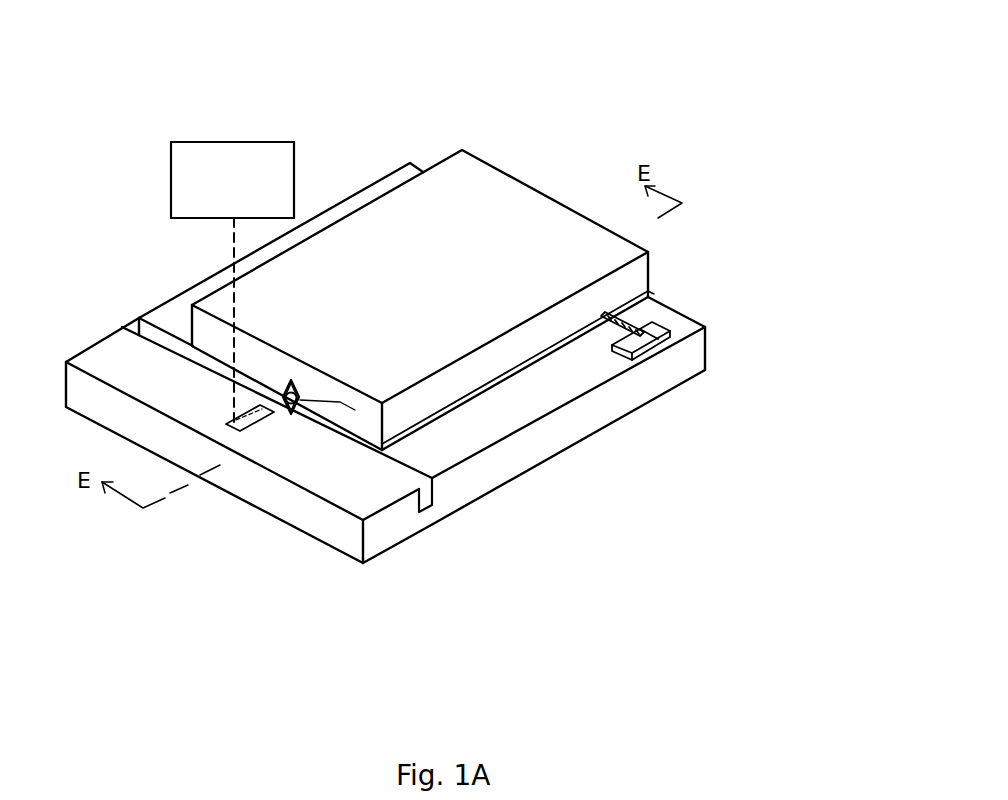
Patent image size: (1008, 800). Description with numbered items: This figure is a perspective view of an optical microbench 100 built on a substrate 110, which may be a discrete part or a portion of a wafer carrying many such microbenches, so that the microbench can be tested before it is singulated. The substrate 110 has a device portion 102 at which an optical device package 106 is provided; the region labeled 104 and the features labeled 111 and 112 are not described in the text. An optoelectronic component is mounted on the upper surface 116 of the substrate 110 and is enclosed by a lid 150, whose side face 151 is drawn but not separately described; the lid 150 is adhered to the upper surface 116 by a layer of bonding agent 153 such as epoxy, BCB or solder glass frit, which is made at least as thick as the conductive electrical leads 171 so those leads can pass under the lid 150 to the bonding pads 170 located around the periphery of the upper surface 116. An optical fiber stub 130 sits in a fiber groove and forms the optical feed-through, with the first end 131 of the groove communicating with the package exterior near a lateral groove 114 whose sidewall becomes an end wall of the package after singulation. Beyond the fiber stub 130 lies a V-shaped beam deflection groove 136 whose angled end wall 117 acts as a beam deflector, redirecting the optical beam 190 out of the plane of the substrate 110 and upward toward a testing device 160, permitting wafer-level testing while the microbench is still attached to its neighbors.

The optical microbench 100 is at (630, 62).
The device portion 102 is at (452, 524).
The rail portion 104 is at (428, 536).
The optical device package 106 is at (486, 152).
The substrate 110 is at (386, 184).
The left rail 111 is at (292, 503).
The side face of base 112 is at (713, 356).
The lateral groove 114 is at (434, 491).
The upper surface 116 is at (512, 428).
The end wall 117 is at (240, 434).
The optical fiber stub 130 is at (292, 385).
The first end 131 is at (345, 402).
The beam deflection groove 136 is at (275, 426).
The lid 150 is at (625, 240).
The side face of stage plate 151 is at (262, 358).
The bonding agent 153 is at (652, 293).
The testing device 160 is at (250, 192).
The bonding pads 170 is at (703, 328).
The conductive electrical leads 171 is at (640, 320).
The optical beam 190 is at (232, 243).